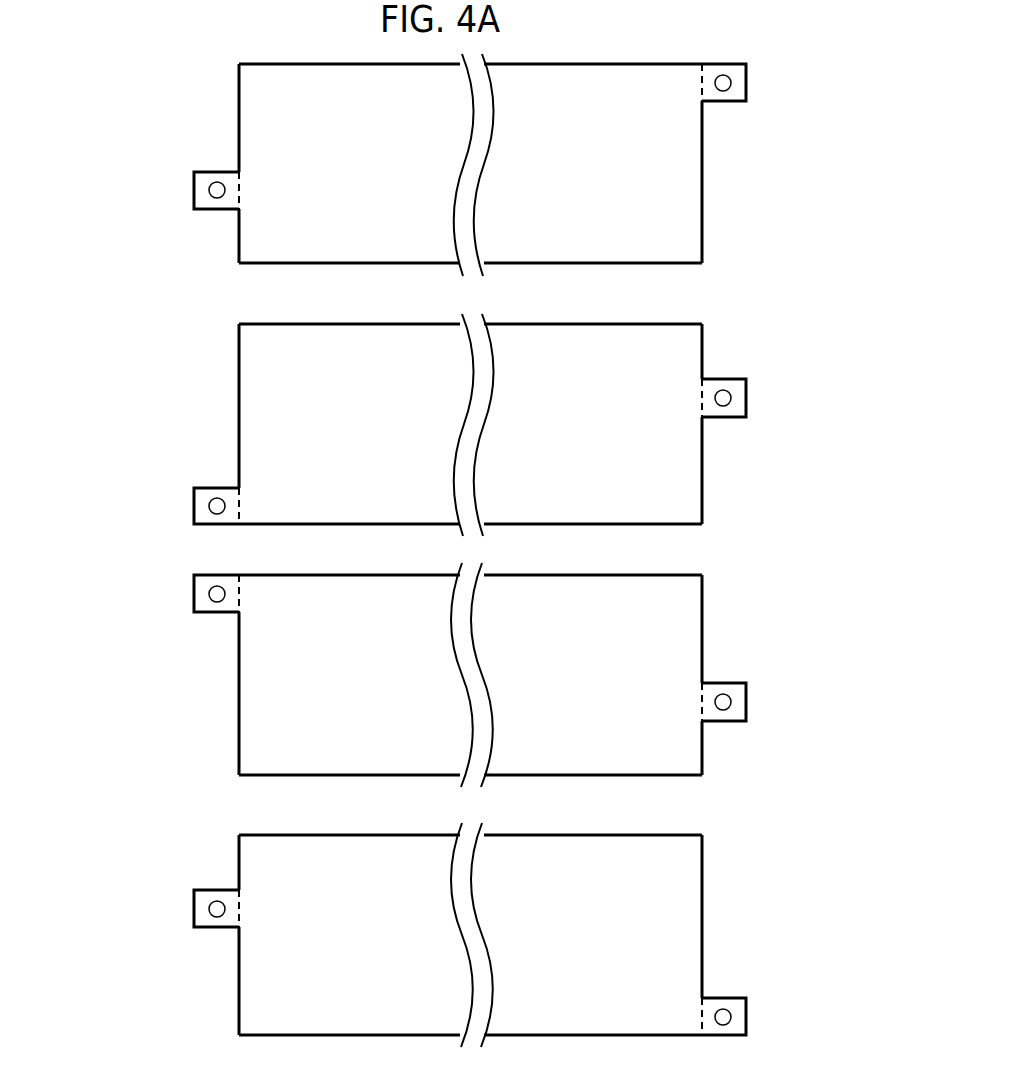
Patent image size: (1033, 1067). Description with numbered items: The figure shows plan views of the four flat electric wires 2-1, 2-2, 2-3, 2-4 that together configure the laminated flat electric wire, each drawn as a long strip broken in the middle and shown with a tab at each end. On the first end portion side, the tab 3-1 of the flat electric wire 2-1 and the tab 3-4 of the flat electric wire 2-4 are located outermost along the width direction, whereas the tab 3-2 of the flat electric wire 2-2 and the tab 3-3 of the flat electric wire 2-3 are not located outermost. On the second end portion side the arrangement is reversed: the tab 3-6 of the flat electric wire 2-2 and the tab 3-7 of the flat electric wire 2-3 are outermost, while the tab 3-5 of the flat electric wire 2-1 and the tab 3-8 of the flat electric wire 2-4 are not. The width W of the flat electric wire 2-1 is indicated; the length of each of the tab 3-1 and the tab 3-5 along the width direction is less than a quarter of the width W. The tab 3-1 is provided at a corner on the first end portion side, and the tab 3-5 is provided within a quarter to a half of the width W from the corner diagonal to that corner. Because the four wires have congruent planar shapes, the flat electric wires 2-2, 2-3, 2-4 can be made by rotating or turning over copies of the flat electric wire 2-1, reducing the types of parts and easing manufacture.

The flat electric wire 2-1 is at (365, 166).
The flat electric wire 2-2 is at (365, 424).
The flat electric wire 2-3 is at (365, 681).
The flat electric wire 2-4 is at (365, 939).
The tab 3-1 is at (738, 86).
The tab 3-2 is at (736, 400).
The tab 3-3 is at (736, 702).
The tab 3-4 is at (736, 1017).
The tab 3-5 is at (200, 190).
The tab 3-6 is at (198, 500).
The tab 3-7 is at (198, 592).
The tab 3-8 is at (198, 903).
The width W is at (239, 64).